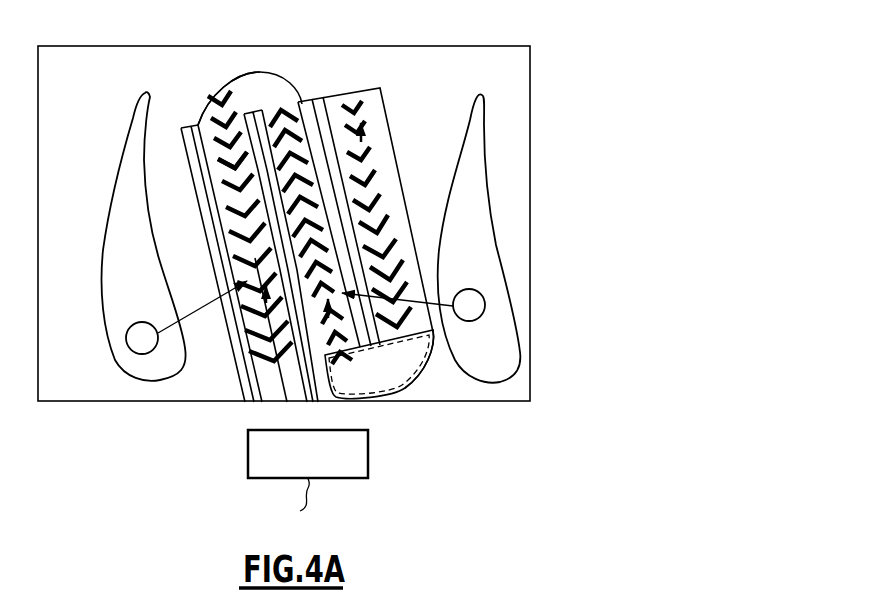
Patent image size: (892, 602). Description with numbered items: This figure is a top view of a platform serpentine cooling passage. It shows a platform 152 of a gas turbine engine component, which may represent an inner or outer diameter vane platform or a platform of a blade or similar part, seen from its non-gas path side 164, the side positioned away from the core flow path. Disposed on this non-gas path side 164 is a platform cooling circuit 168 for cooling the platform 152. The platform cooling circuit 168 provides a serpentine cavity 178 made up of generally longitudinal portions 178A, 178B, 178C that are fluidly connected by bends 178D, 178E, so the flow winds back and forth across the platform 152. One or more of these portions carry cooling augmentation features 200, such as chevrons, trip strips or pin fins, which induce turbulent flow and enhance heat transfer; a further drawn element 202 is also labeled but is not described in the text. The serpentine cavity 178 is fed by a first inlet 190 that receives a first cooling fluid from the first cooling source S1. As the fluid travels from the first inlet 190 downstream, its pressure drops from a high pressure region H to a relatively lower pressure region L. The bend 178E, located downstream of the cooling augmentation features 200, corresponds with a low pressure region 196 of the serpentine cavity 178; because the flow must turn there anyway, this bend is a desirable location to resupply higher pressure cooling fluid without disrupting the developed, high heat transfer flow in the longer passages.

The platform 152 is at (553, 56).
The non-gas path side 164 is at (513, 135).
The platform cooling circuit 168 is at (396, 101).
The serpentine cavity 178 is at (333, 244).
The longitudinal portion 178A is at (270, 378).
The longitudinal portion 178B is at (308, 193).
The longitudinal portion 178C is at (390, 161).
The bend 178D is at (253, 97).
The bend 178E is at (389, 378).
The first inlet 190 is at (292, 406).
The low pressure region 196 is at (433, 349).
The cooling augmentation features 200 is at (207, 103).
The traction element 202 is at (222, 155).
The high pressure region H is at (186, 317).
The low pressure region L is at (413, 305).
The first cooling source S1 is at (308, 480).